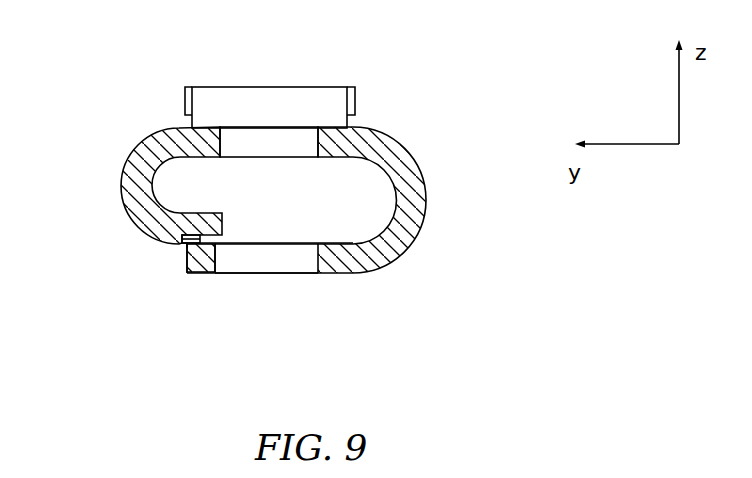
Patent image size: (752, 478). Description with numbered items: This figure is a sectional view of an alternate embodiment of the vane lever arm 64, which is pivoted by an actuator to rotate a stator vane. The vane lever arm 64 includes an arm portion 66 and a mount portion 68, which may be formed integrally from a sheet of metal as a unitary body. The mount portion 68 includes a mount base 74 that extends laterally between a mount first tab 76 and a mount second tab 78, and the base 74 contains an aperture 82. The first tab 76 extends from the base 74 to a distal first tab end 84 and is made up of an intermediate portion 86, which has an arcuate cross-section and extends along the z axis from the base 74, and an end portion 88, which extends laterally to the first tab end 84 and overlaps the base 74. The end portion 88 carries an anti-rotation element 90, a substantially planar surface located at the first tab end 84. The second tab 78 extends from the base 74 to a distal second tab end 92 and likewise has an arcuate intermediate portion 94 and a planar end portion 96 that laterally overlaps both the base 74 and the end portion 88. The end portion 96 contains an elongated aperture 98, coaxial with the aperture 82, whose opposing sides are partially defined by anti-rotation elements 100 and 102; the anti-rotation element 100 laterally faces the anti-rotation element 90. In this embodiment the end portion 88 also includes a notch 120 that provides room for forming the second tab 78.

The vane lever arm 64 is at (88, 72).
The arm portion 66 is at (358, 98).
The mount portion 68 is at (428, 171).
The mount base 74 is at (367, 129).
The mount first tab 76 is at (124, 188).
The mount second tab 78 is at (420, 232).
The aperture 82 is at (286, 134).
The first tab end 84 is at (225, 235).
The intermediate portion 86 is at (126, 210).
The end portion 88 is at (200, 212).
The anti-rotation element 90 is at (191, 239).
The second tab end 92 is at (187, 263).
The intermediate portion 94 is at (427, 197).
The end portion 96 is at (345, 273).
The aperture 98 is at (283, 270).
The anti-rotation element 100 is at (313, 260).
The anti-rotation element 102 is at (215, 263).
The notch 120 is at (185, 244).